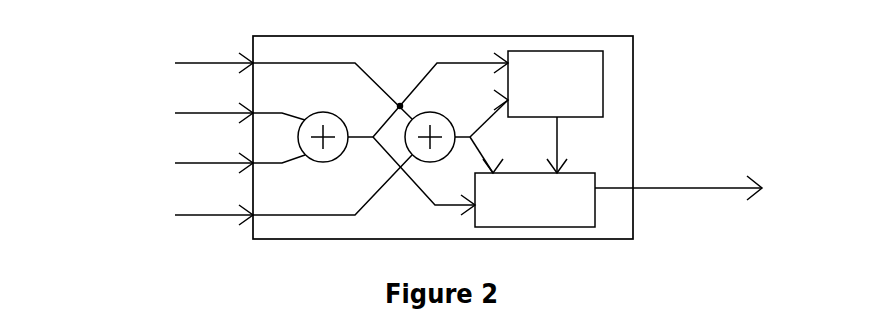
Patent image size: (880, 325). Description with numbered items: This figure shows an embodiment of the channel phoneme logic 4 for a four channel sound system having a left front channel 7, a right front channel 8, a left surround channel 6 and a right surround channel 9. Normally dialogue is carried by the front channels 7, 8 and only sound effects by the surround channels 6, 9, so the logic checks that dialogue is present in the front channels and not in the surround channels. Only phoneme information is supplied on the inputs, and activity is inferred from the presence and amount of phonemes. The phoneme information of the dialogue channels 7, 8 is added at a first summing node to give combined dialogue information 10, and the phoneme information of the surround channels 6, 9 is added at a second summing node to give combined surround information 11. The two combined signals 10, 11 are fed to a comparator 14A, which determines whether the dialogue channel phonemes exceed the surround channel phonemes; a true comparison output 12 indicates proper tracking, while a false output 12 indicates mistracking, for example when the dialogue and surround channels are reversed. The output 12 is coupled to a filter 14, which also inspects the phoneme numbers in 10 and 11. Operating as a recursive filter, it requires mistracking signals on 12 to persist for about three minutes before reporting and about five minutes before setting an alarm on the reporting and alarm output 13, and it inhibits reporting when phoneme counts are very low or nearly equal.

The channel phoneme logic 4 is at (401, 235).
The left surround channel 6 is at (198, 62).
The left front channel 7 is at (190, 113).
The right front channel 8 is at (190, 163).
The right surround channel 9 is at (186, 212).
The combined dialogue information 10 is at (360, 140).
The combined surround information 11 is at (483, 137).
The comparison output 12 is at (562, 140).
The reporting and alarm output 13 is at (700, 195).
The filter 14 is at (582, 220).
The comparator 14A is at (585, 113).